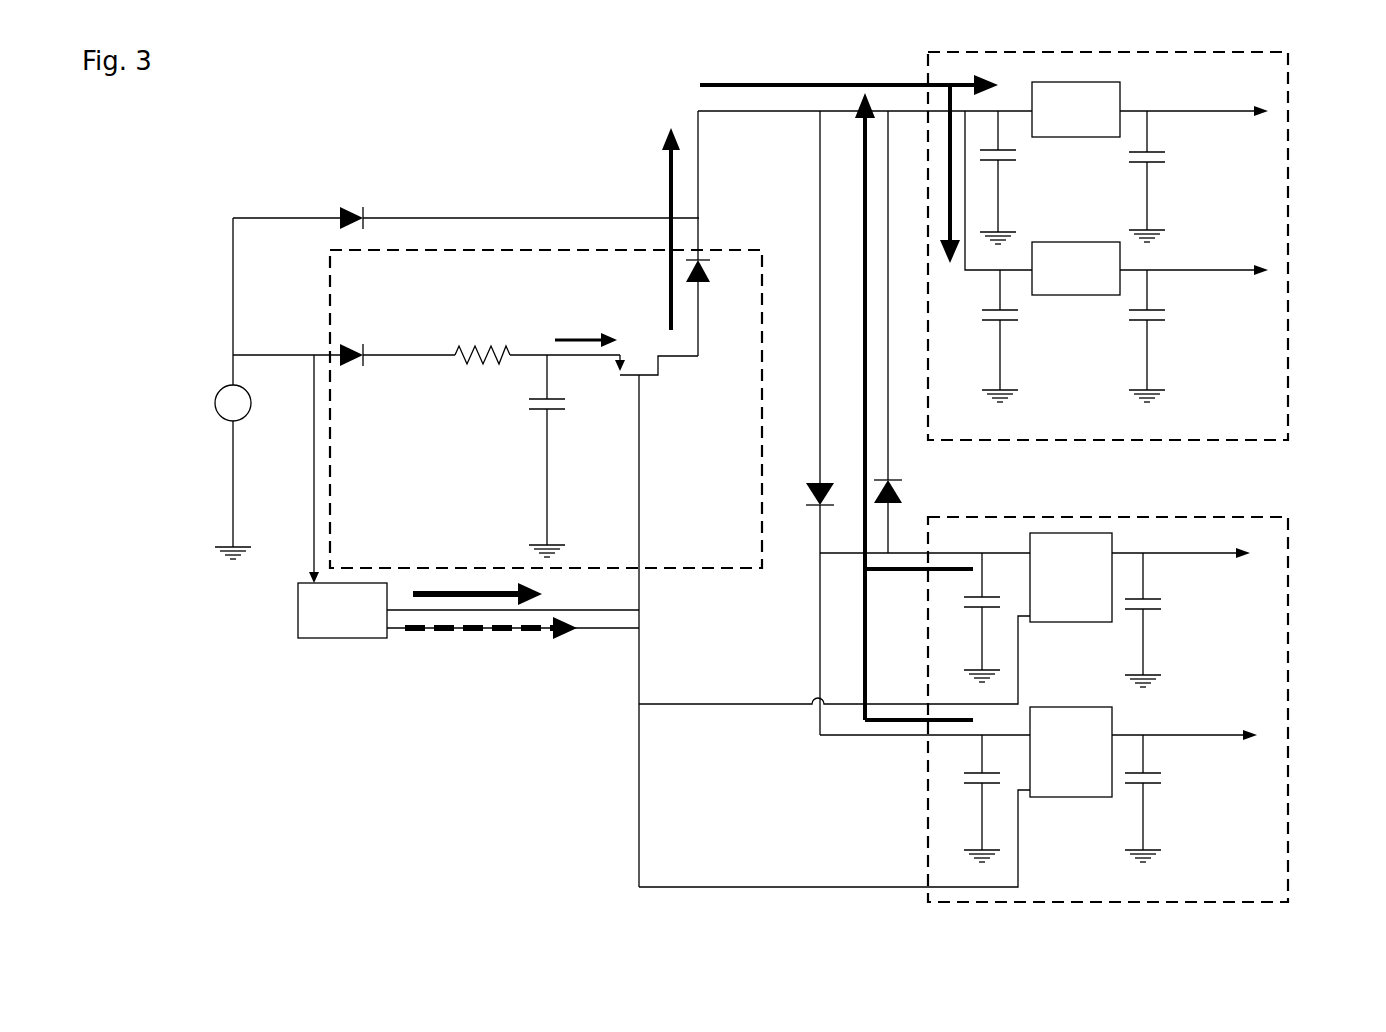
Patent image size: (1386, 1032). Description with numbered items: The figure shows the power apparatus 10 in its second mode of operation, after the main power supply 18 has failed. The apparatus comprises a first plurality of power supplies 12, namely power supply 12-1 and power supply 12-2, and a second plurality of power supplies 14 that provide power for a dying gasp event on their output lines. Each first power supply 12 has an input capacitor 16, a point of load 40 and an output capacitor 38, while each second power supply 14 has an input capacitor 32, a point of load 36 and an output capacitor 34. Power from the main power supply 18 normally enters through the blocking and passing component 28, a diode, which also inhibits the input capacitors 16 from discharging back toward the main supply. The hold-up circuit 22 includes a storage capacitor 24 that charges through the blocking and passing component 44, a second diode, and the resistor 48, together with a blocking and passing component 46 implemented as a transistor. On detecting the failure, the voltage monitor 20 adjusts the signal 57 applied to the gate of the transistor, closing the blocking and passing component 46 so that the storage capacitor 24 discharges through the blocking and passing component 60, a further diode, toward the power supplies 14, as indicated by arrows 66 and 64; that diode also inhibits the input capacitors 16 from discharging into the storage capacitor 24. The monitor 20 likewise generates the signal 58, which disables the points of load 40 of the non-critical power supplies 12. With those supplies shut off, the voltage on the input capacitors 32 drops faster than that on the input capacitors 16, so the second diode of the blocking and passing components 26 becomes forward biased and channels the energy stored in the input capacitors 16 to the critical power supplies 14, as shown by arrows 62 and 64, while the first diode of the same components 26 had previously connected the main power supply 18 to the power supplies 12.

The power apparatus 10 is at (480, 116).
The first plurality of power supplies 12 is at (1288, 713).
The power supply 12-1 is at (1210, 593).
The power supply 12-2 is at (1210, 807).
The second plurality of power supplies 14 is at (1291, 228).
The input capacitor 16 is at (973, 607).
The main power supply 18 is at (222, 418).
The voltage monitor 20 is at (337, 640).
The hold-up circuit 22 is at (546, 250).
The storage capacitor 24 is at (542, 408).
The blocking and passing components 26 is at (815, 480).
The blocking and passing component 28 is at (340, 208).
The input capacitor 32 is at (1012, 163).
The output capacitor 34 is at (1163, 165).
The point of load 36 is at (1072, 137).
The output capacitor 38 is at (1158, 610).
The point of load 40 is at (1072, 625).
The blocking and passing component 44 is at (363, 352).
The blocking and passing component 46 is at (657, 377).
The resistor 48 is at (500, 355).
The signal 57 is at (448, 588).
The signal 58 is at (472, 634).
The blocking and passing component 60 is at (707, 284).
The arrow 62 is at (865, 210).
The arrow 64 is at (847, 83).
The arrow 66 is at (668, 293).